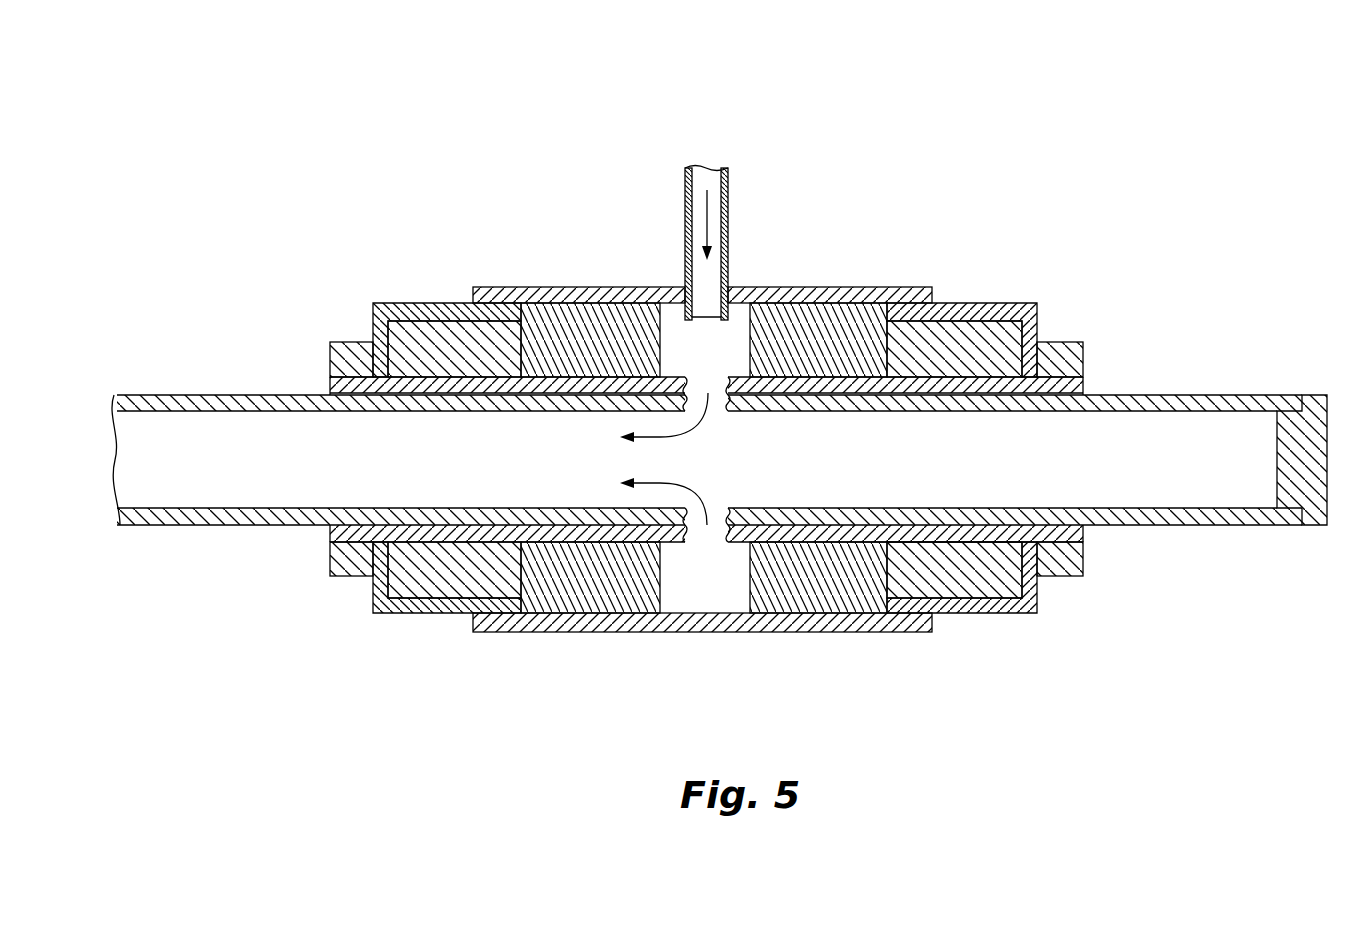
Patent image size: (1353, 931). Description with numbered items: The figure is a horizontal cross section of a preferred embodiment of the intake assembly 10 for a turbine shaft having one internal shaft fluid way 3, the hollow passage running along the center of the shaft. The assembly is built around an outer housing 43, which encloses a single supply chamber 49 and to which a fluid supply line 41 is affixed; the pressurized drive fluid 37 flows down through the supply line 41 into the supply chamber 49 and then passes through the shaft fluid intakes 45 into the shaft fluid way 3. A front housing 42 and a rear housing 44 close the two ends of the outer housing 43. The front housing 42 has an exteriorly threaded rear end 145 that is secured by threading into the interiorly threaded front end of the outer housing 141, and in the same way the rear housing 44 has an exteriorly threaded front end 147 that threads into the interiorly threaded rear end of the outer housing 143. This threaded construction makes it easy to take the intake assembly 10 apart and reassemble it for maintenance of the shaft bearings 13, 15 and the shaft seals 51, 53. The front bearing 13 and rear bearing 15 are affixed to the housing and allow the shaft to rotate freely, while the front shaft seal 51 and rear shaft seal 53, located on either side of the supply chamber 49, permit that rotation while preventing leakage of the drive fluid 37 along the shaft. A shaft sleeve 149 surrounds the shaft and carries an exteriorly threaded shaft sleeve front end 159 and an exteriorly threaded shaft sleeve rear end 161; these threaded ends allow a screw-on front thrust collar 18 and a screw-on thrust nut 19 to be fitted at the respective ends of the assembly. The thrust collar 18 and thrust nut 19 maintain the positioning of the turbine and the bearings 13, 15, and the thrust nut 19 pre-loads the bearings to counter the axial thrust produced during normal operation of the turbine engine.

The internal shaft fluid way 3 is at (248, 450).
The intake assembly 10 is at (923, 287).
The front bearing 13 is at (428, 582).
The rear bearing 15 is at (992, 587).
The front thrust collar 18 is at (341, 342).
The thrust nut 19 is at (1072, 342).
The pressurized drive fluid 37 is at (705, 218).
The fluid supply line 41 is at (729, 207).
The front housing 42 is at (397, 303).
The outer housing 43 is at (810, 288).
The rear housing 44 is at (998, 303).
The shaft fluid intake 45 is at (703, 535).
The supply chamber 49 is at (677, 342).
The front shaft seal 51 is at (573, 612).
The rear shaft seal 53 is at (835, 614).
The interiorly threaded front end of the outer housing 141 is at (472, 287).
The interiorly threaded rear end of the outer housing 143 is at (940, 303).
The exteriorly threaded rear end of the front housing 145 is at (478, 312).
The exteriorly threaded front end of the rear housing 147 is at (930, 314).
The shaft sleeve 149 is at (418, 540).
The shaft sleeve front end 159 is at (332, 532).
The shaft sleeve rear end 161 is at (1083, 533).